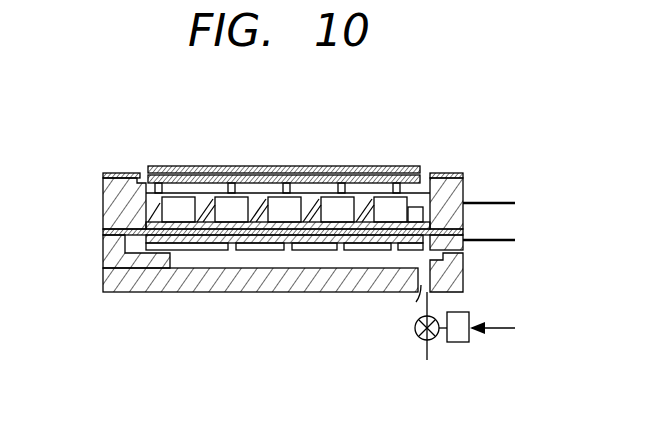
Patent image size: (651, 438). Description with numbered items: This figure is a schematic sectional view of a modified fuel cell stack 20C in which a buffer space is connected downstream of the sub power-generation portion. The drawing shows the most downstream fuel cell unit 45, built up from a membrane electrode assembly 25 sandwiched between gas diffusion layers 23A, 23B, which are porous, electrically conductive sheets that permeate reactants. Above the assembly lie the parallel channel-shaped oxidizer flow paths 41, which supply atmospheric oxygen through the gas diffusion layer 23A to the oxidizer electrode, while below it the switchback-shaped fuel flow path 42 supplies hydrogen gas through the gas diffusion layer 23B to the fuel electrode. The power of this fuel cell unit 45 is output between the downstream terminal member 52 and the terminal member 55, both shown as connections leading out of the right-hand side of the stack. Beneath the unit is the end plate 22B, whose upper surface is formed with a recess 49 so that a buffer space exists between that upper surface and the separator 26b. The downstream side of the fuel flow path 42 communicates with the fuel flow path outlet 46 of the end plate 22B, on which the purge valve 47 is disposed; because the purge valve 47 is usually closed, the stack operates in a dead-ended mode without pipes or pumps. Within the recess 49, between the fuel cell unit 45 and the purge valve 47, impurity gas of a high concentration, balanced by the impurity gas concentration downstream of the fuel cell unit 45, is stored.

The liquid ejecting head 20C is at (266, 141).
The fuel cell unit 45 is at (43, 176).
The oxidizer flow paths 41 is at (170, 213).
The gas diffusion layer 23A is at (150, 201).
The membrane electrode assembly 25 is at (140, 230).
The gas diffusion layer 23B is at (150, 238).
The fuel flow path 42 is at (168, 245).
The downstream terminal member 52 is at (482, 203).
The terminal member 55 is at (482, 240).
The separator 26b is at (463, 246).
The end plate 22B is at (463, 282).
The recess 49 is at (278, 258).
The fuel flow path outlet 46 is at (422, 288).
The purge valve 47 is at (458, 343).